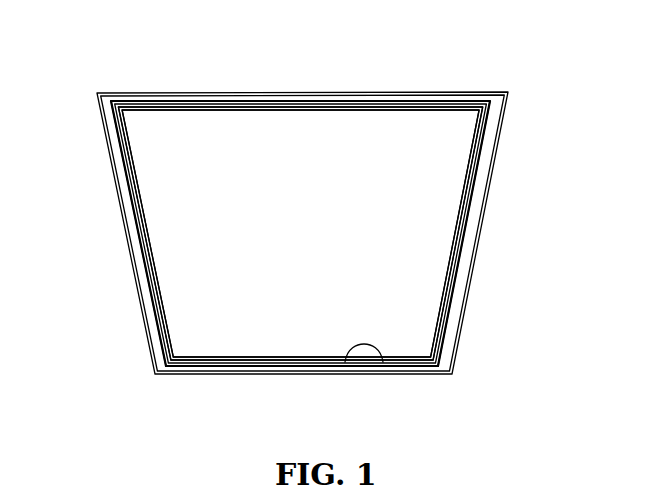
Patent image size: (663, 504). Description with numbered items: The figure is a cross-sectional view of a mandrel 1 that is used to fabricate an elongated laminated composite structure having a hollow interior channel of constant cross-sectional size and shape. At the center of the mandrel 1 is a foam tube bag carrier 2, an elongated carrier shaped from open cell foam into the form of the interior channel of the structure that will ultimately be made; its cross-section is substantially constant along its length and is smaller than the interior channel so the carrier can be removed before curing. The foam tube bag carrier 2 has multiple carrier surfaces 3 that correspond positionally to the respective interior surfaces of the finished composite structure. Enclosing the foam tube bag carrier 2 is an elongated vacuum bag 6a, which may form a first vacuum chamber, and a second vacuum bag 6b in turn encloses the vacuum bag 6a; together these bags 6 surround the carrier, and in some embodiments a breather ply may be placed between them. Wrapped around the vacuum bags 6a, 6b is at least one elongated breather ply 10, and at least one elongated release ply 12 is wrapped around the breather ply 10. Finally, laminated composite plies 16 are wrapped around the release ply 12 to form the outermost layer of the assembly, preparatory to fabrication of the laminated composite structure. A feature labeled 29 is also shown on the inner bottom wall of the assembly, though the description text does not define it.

The mandrel 1 is at (492, 60).
The foam tube bag carrier 2 is at (456, 318).
The carrier surfaces 3 is at (303, 108).
The frame profile 6 is at (214, 378).
The vacuum bag 6a is at (140, 217).
The second vacuum bag 6b is at (436, 99).
The breather ply 10 is at (468, 214).
The release ply 12 is at (490, 173).
The laminated composite plies 16 is at (503, 130).
The recess 29 is at (383, 362).